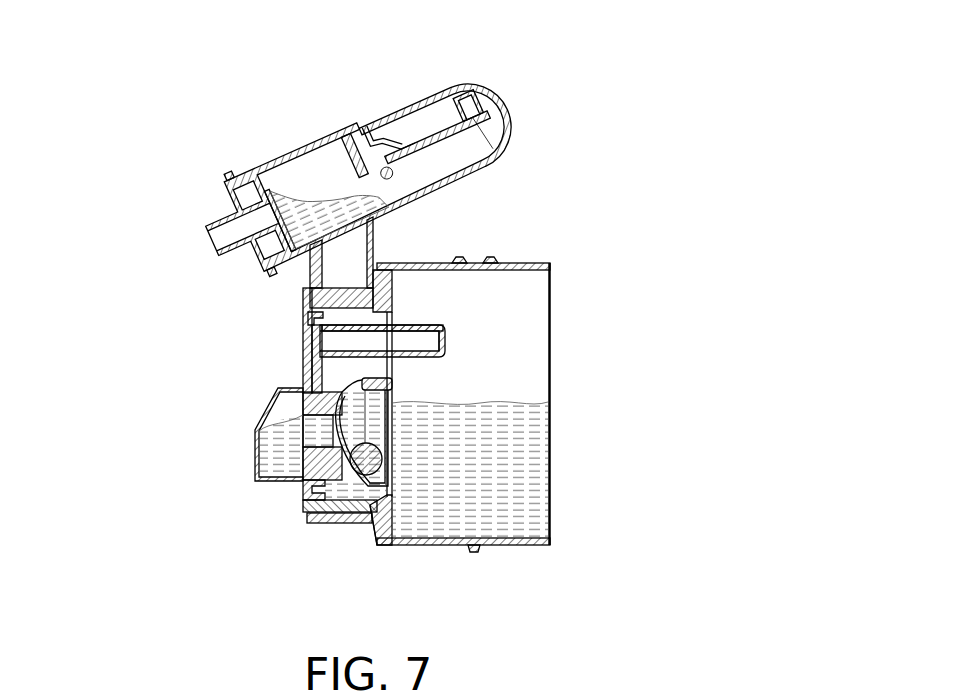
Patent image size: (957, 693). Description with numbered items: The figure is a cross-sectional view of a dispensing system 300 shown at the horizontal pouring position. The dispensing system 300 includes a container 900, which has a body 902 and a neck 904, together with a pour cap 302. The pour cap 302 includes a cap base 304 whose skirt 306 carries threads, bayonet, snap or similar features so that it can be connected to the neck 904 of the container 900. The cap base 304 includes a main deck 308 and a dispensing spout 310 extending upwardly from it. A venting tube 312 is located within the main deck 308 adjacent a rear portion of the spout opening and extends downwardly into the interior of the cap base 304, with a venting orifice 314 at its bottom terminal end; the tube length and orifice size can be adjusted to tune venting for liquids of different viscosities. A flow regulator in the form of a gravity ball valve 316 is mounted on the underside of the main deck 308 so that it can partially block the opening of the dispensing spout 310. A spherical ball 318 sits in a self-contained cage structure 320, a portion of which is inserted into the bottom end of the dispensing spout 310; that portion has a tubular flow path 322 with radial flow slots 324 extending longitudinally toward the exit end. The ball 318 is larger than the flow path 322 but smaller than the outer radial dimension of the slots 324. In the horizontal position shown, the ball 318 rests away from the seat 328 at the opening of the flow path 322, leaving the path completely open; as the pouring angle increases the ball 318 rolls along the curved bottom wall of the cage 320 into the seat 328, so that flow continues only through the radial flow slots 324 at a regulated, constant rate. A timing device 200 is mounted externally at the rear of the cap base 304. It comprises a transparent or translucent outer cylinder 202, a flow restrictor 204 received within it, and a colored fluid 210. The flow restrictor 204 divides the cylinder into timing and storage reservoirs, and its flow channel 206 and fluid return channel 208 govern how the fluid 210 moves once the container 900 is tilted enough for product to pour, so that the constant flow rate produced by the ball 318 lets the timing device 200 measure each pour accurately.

The dispensing system 300 is at (172, 142).
The timing device 200 is at (377, 115).
The outer cylinder 202 is at (510, 123).
The flow restrictor 204 is at (420, 133).
The flow channel 206 is at (362, 123).
The fluid return channel 208 is at (467, 105).
The colored fluid 210 is at (317, 207).
The container 900 is at (518, 262).
The body 902 is at (537, 545).
The neck 904 is at (360, 298).
The pour cap 302 is at (272, 400).
The cap base 304 is at (303, 520).
The skirt 306 is at (338, 522).
The main deck 308 is at (320, 360).
The dispensing spout 310 is at (263, 448).
The venting tube 312 is at (413, 332).
The venting orifice 314 is at (445, 338).
The gravity ball valve 316 is at (400, 442).
The spherical ball 318 is at (368, 532).
The cage structure 320 is at (388, 393).
The tubular flow path 322 is at (307, 437).
The radial flow slots 324 is at (302, 477).
The seat 328 is at (392, 443).